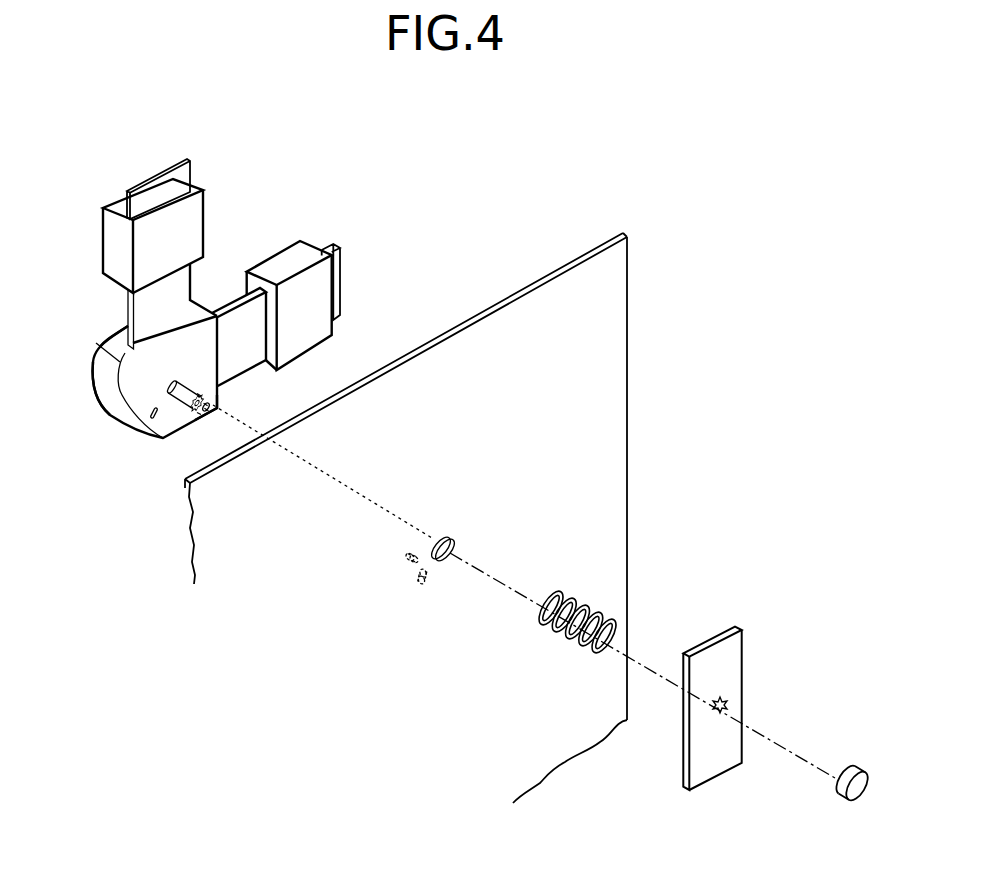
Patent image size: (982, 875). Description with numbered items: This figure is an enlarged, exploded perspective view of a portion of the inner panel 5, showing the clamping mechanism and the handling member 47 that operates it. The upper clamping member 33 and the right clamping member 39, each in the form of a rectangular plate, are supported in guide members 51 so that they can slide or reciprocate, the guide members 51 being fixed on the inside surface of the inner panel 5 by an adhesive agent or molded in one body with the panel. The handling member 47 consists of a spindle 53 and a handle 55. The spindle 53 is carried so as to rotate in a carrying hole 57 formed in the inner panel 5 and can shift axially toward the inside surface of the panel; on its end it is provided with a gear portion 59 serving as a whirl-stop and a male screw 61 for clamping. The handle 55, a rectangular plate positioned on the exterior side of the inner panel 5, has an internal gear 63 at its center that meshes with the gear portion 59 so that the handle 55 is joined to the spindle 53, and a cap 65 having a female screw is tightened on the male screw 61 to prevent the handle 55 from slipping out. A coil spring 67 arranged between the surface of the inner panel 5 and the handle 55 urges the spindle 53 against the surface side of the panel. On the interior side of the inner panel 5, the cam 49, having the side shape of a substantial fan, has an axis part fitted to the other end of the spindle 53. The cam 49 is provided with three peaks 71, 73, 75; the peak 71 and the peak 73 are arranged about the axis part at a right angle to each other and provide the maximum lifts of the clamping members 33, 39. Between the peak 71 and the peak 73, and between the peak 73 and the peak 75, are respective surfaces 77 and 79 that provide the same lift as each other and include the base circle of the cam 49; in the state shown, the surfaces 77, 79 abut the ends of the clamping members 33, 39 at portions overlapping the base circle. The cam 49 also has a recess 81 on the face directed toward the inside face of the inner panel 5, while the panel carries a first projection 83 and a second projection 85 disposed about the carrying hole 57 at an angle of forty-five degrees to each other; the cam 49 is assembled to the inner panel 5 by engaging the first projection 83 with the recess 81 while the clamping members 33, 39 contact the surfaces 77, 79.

The inner panel 5 is at (634, 350).
The upper clamping member 33 is at (165, 170).
The right clamping member 39 is at (342, 256).
The handling member 47 is at (742, 679).
The cam 49 is at (106, 397).
The guide member 51 is at (113, 245).
The spindle 53 is at (168, 386).
The handle 55 is at (708, 636).
The carrying hole 57 is at (449, 541).
The gear portion 59 is at (188, 407).
The male screw 61 is at (201, 421).
The internal gear 63 is at (708, 720).
The cap 65 is at (855, 768).
The coil spring 67 is at (578, 592).
The peak 71 is at (93, 351).
The peak 73 is at (200, 303).
The peak 75 is at (217, 408).
The surface 77 is at (115, 333).
The surface 79 is at (220, 354).
The recess 81 is at (149, 425).
The first projection 83 is at (419, 585).
The second projection 85 is at (404, 558).